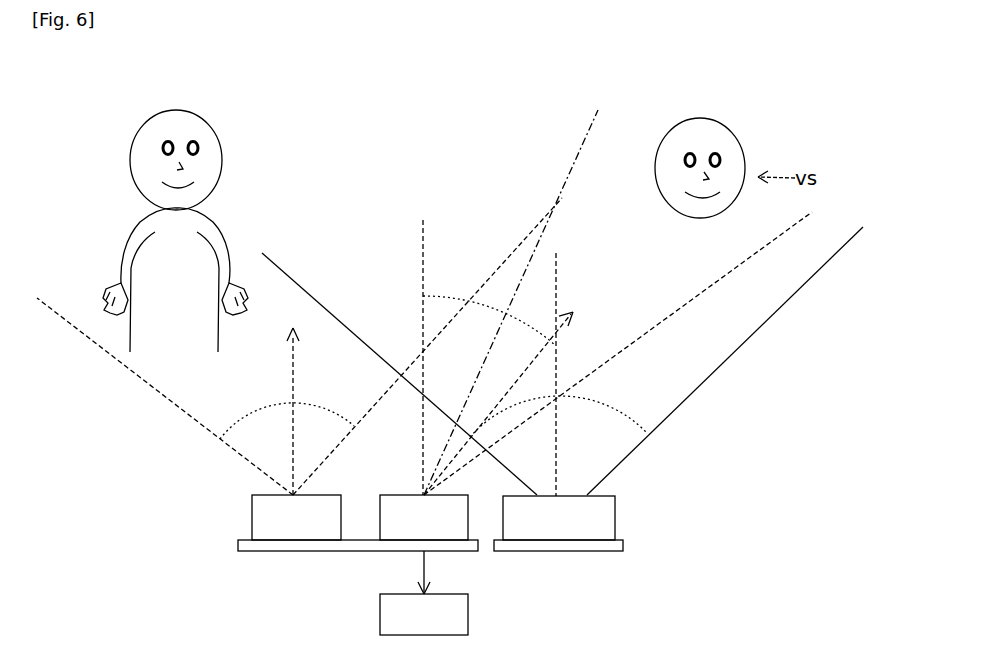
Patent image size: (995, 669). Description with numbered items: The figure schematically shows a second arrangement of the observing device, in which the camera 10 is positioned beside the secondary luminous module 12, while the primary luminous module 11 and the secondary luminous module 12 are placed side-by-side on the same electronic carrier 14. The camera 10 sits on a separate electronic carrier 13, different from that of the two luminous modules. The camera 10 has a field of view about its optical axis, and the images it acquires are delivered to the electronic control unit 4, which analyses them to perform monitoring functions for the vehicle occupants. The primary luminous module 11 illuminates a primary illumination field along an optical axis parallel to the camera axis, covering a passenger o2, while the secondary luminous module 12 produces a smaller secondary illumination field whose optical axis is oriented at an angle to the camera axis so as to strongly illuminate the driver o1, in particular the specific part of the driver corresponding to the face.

The electronic control unit 4 is at (424, 593).
The camera 10 is at (562, 383).
The primary luminous module 11 is at (299, 369).
The secondary luminous module 12 is at (596, 325).
The electronic carrier 13 is at (557, 551).
The electronic carrier 14 is at (270, 551).
The driver o1 is at (730, 130).
The passenger o2 is at (203, 118).